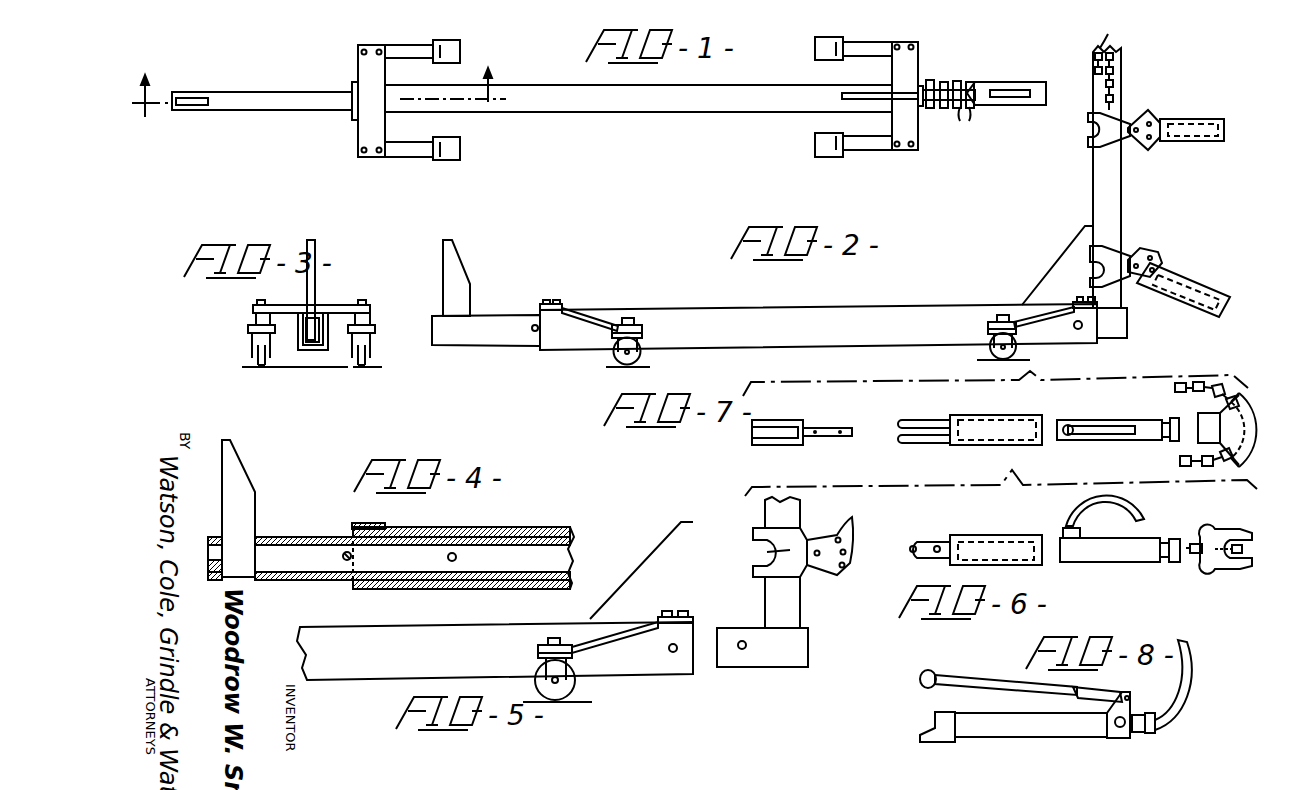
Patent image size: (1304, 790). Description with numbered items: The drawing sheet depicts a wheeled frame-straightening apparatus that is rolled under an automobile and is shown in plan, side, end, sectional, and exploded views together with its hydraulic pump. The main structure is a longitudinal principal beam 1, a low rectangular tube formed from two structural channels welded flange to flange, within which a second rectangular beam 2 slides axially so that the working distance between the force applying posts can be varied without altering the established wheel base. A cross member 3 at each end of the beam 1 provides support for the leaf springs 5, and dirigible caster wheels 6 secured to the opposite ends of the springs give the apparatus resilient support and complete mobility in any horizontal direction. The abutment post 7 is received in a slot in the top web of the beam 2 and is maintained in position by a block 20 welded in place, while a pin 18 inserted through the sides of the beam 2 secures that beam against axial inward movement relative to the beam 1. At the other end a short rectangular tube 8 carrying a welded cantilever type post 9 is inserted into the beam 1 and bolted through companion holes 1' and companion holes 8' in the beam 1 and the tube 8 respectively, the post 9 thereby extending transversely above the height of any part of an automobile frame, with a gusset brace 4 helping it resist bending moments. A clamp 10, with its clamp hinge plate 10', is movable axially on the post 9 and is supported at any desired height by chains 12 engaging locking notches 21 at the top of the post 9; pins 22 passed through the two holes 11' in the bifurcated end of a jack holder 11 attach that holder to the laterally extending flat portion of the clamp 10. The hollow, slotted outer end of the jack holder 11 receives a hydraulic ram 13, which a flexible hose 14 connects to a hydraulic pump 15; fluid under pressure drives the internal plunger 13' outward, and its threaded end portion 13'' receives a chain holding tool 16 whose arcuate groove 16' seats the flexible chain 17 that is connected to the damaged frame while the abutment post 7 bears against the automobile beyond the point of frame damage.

In FIG. 1, the longitudinal principal beam 1 is at (638, 112).
In FIG. 2, the longitudinal principal beam 1 is at (818, 313).
In FIG. 3, the longitudinal principal beam 1 is at (319, 356).
In FIG. 4, the longitudinal principal beam 1 is at (463, 542).
In FIG. 5, the longitudinal principal beam 1 is at (495, 638).
In FIG. 5, the companion holes 1' is at (654, 651).
In FIG. 1, the beam 2 is at (248, 102).
In FIG. 2, the beam 2 is at (490, 322).
In FIG. 3, the beam 2 is at (307, 347).
In FIG. 4, the beam 2 is at (320, 579).
In FIG. 1, the cross member 3 is at (367, 68).
In FIG. 2, the cross member 3 is at (549, 303).
In FIG. 3, the cross member 3 is at (342, 305).
In FIG. 4, the cross member 3 is at (378, 526).
In FIG. 5, the cross member 3 is at (675, 617).
In FIG. 1, the gusset brace 4 is at (315, 83).
In FIG. 2, the gusset brace 4 is at (1048, 271).
In FIG. 5, the gusset brace 4 is at (644, 561).
In FIG. 1, the leaf springs 5 is at (407, 46).
In FIG. 2, the leaf springs 5 is at (591, 318).
In FIG. 3, the leaf springs 5 is at (253, 320).
In FIG. 5, the leaf springs 5 is at (592, 637).
In FIG. 2, the dirigible caster wheels 6 is at (616, 359).
In FIG. 3, the dirigible caster wheels 6 is at (264, 365).
In FIG. 5, the dirigible caster wheels 6 is at (562, 697).
In FIG. 2, the abutment post 7 is at (453, 271).
In FIG. 3, the abutment post 7 is at (317, 273).
In FIG. 4, the abutment post 7 is at (243, 484).
In FIG. 2, the short rectangular tube 8 is at (1124, 323).
In FIG. 6, the companion holes 8' is at (762, 600).
In FIG. 1, the cantilever type post 9 is at (948, 89).
In FIG. 2, the cantilever type post 9 is at (1106, 186).
In FIG. 2, the clamp 10 is at (1111, 198).
In FIG. 7, the clamp 10 is at (802, 447).
In FIG. 6, the clamp 10 is at (767, 552).
In FIG. 6, the clamp hinge plate 10' is at (830, 539).
In FIG. 1, the jack holder 11 is at (1006, 77).
In FIG. 2, the jack holder 11 is at (1183, 218).
In FIG. 7, the jack holder 11 is at (970, 417).
In FIG. 6, the jack holder 11 is at (996, 536).
In FIG. 6, the holes 11' is at (930, 536).
In FIG. 2, the chains 12 is at (1115, 70).
In FIG. 7, the hydraulic ram 13 is at (1109, 441).
In FIG. 6, the hydraulic ram 13 is at (1110, 565).
In FIG. 7, the internal plunger 13' is at (1146, 444).
In FIG. 6, the internal plunger 13' is at (1141, 566).
In FIG. 7, the threaded end portion 13'' is at (1188, 417).
In FIG. 6, the threaded end portion 13'' is at (1177, 570).
In FIG. 7, the flexible hose 14 is at (1097, 407).
In FIG. 6, the flexible hose 14 is at (1075, 510).
In FIG. 8, the flexible hose 14 is at (1192, 663).
In FIG. 8, the hydraulic pump 15 is at (995, 670).
In FIG. 7, the chain holding tool 16 is at (1237, 431).
In FIG. 6, the chain holding tool 16 is at (1225, 561).
In FIG. 6, the arcuate groove 16' is at (1232, 530).
In FIG. 7, the flexible chain 17 is at (1173, 392).
In FIG. 1, the pin 18 is at (350, 120).
In FIG. 2, the pin 18 is at (531, 332).
In FIG. 4, the pin 18 is at (344, 553).
In FIG. 4, the block 20 is at (221, 567).
In FIG. 2, the locking notches 21 is at (1095, 33).
In FIG. 1, the pins 22 is at (969, 129).